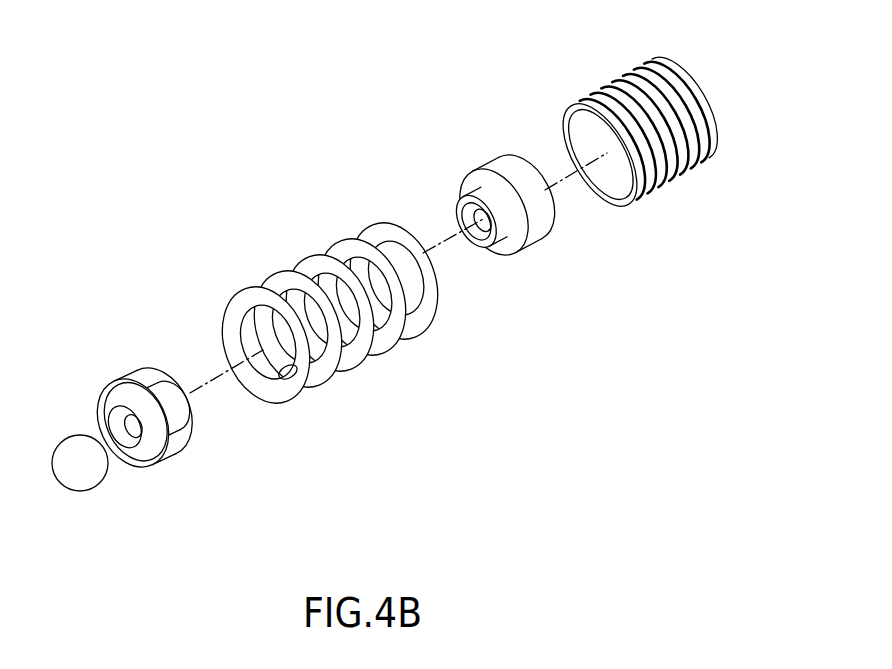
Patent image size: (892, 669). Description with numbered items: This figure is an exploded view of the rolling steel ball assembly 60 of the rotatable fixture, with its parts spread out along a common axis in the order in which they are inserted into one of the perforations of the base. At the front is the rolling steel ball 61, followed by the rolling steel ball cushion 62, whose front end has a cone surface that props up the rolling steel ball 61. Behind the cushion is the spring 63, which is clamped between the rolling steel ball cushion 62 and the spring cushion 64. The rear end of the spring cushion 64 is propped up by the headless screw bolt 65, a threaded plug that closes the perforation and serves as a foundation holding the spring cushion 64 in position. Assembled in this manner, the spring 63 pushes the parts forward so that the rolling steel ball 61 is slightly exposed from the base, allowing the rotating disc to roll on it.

The rolling steel ball assembly 60 is at (422, 278).
The rolling steel ball 61 is at (99, 485).
The rolling steel ball cushion 62 is at (183, 454).
The spring 63 is at (377, 349).
The spring cushion 64 is at (537, 244).
The headless screw bolt 65 is at (679, 180).